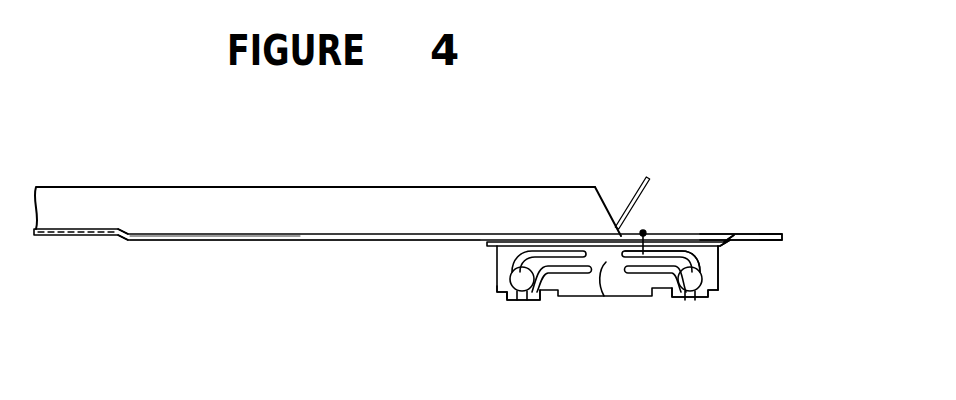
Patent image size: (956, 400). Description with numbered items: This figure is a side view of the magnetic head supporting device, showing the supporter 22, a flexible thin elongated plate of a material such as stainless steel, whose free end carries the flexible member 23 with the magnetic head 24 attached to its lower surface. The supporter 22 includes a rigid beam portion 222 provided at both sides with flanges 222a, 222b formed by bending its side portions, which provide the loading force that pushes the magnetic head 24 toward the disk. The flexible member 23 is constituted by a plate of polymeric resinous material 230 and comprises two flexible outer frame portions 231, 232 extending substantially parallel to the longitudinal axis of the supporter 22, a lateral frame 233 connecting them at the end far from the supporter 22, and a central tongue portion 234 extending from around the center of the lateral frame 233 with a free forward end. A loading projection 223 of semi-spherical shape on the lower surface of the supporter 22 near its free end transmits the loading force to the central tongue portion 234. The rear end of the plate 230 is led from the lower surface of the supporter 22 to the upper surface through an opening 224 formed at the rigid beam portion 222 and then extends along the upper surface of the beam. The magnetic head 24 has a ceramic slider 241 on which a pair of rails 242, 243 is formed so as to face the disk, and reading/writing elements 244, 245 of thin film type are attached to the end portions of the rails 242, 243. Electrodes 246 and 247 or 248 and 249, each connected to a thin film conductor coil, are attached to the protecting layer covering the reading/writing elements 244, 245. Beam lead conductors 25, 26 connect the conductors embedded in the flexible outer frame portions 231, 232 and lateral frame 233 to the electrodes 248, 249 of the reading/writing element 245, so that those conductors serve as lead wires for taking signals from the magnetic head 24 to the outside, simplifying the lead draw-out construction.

The supporter 22 is at (315, 180).
The rigid beam portion 222 is at (72, 237).
The flange 222a is at (95, 187).
The flange 222b is at (207, 187).
The opening 224 is at (132, 220).
The plate of polymeric resinous material 230 is at (200, 241).
The loading projection 223 is at (613, 230).
The flexible member 23 is at (768, 250).
The lateral frame 233 is at (761, 232).
The central tongue portion 234 is at (500, 243).
The electrode 248 is at (710, 238).
The magnetic head 24 is at (483, 265).
The rail 242 is at (496, 292).
The reading/writing element 244 is at (506, 296).
The rail 243 is at (710, 298).
The slider 241 is at (718, 260).
The beam lead conductor 26 is at (604, 296).
The electrode 246 is at (535, 250).
The electrode 247 is at (550, 273).
The flexible outer frame portion 232 is at (687, 243).
The flexible outer frame portion 231 is at (662, 261).
The electrode 249 is at (641, 296).
The reading/writing element 245 is at (700, 300).
The beam lead conductor 25 is at (643, 233).